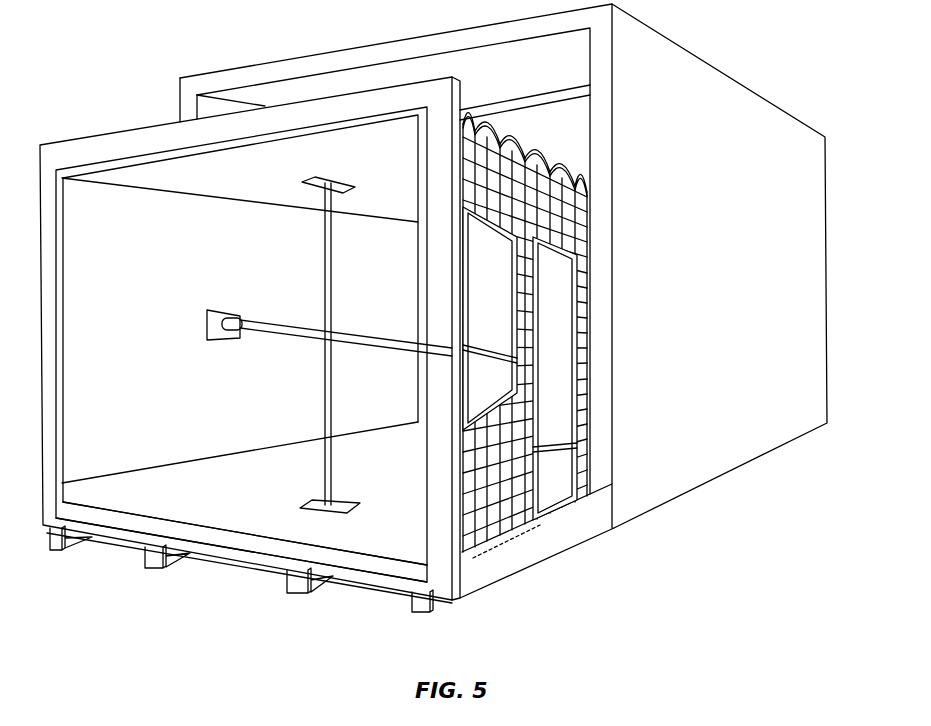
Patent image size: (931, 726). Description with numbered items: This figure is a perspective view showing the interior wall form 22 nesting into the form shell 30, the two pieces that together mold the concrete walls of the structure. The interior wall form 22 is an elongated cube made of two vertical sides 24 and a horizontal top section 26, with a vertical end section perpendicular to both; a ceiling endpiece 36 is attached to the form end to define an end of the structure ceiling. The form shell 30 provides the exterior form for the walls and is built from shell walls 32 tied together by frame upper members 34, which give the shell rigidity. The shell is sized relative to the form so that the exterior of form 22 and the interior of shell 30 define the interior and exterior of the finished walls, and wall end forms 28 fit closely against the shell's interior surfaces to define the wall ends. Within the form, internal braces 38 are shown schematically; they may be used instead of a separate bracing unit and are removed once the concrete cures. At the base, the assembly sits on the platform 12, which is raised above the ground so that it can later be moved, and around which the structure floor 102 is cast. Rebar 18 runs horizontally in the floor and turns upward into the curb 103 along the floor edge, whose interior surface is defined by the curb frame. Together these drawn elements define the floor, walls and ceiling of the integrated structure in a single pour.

The platform 12 is at (392, 582).
The rebar 18 is at (517, 428).
The interior wall form 22 is at (188, 406).
The vertical sides 24 is at (537, 450).
The top section 26 is at (372, 170).
The wall end forms 28 is at (457, 277).
The form shell 30 is at (727, 88).
The shell walls 32 is at (185, 93).
The frame upper members 34 is at (493, 23).
The ceiling endpiece 36 is at (130, 133).
The internal braces 38 is at (320, 280).
The structure floor 102 is at (167, 528).
The curb 103 is at (143, 480).